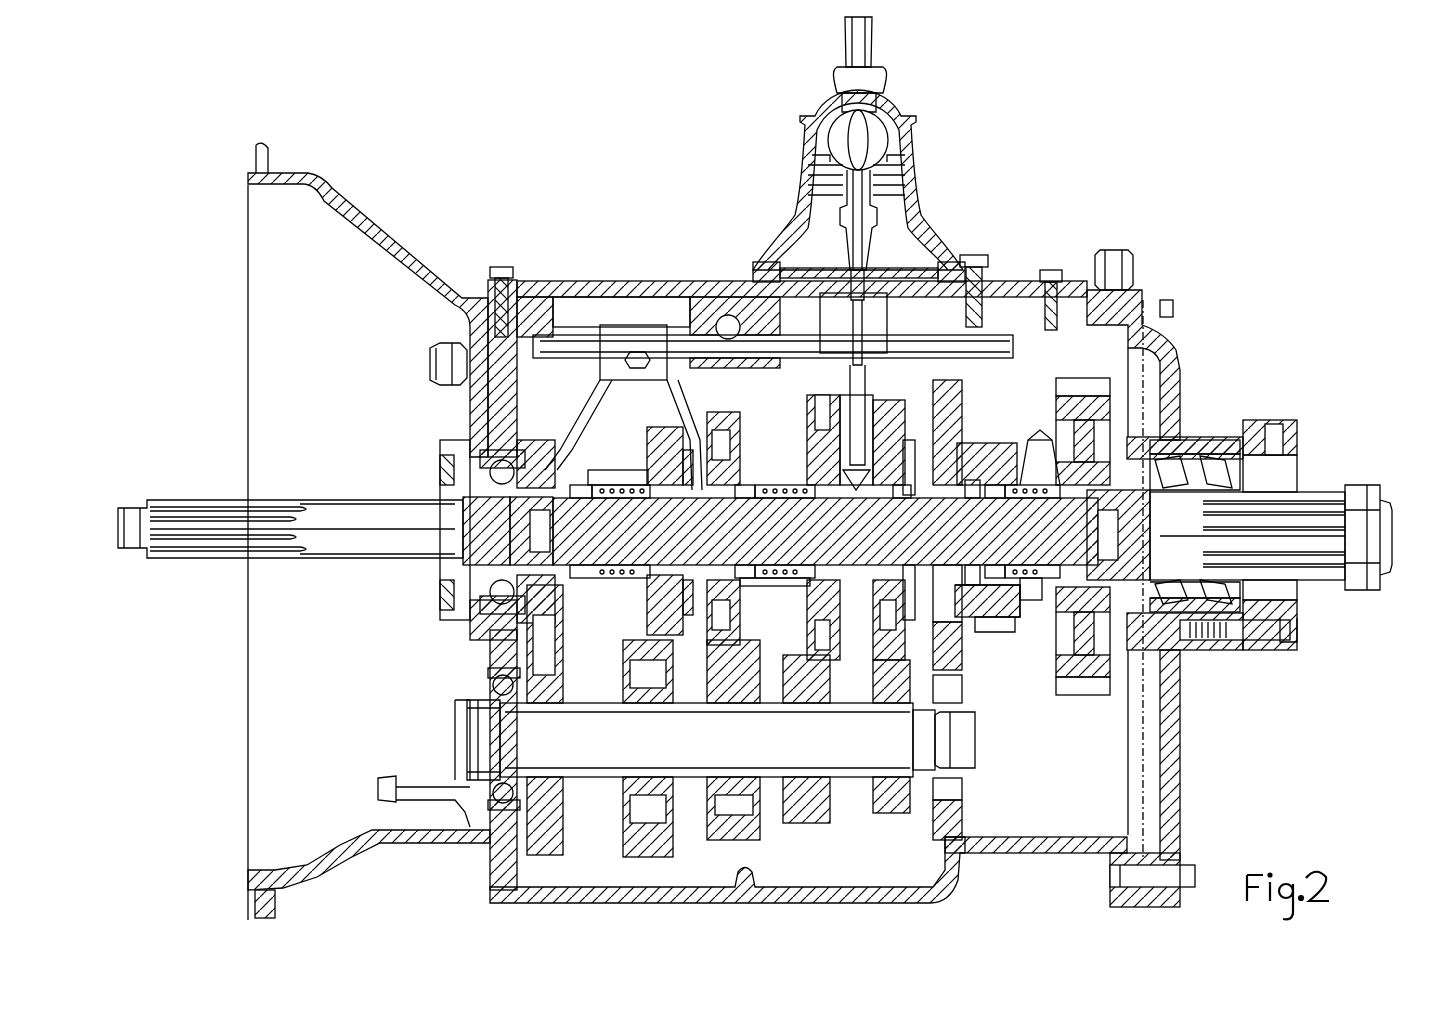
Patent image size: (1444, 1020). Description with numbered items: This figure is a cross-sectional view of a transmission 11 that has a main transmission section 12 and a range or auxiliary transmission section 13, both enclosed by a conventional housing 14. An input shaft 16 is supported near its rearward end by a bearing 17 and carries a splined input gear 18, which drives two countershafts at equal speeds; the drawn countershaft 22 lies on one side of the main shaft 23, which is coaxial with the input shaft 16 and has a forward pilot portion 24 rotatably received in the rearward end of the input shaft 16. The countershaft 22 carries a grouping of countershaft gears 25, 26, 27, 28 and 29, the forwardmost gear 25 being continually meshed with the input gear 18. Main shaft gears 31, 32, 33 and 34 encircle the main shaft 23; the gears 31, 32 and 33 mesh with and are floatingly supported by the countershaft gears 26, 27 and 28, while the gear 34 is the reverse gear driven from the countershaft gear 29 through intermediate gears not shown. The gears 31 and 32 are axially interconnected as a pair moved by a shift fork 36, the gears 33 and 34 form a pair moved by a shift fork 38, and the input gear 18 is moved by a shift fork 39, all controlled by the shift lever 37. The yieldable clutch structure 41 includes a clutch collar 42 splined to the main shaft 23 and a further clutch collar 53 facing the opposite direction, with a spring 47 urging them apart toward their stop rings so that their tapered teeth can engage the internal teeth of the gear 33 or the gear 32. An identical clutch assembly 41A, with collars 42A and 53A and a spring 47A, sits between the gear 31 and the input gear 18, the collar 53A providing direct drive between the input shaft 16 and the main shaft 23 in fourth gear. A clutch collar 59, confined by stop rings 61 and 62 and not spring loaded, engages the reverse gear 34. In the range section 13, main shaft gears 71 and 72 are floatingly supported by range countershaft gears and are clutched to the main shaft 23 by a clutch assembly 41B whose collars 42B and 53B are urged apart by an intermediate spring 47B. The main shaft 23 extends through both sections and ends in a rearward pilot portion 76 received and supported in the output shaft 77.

The transmission 11 is at (595, 122).
The main transmission section 12 is at (744, 897).
The range transmission section 13 is at (1032, 860).
The housing 14 is at (600, 283).
The input shaft 16 is at (345, 505).
The bearing 17 is at (438, 484).
The input gear 18 is at (543, 447).
The countershaft 22 is at (905, 740).
The main shaft 23 is at (600, 580).
The pilot portion 24 is at (490, 548).
The countershaft gear 25 is at (510, 860).
The countershaft gear 26 is at (640, 840).
The countershaft gear 27 is at (745, 828).
The countershaft gear 28 is at (808, 815).
The countershaft gear 29 is at (890, 808).
The main shaft gear 31 is at (660, 430).
The main shaft gear 32 is at (720, 420).
The main shaft gear 33 is at (799, 527).
The reverse gear 34 is at (890, 410).
The shift fork 36 is at (678, 390).
The shift lever 37 is at (867, 42).
The shift fork 38 is at (848, 393).
The shift fork 39 is at (585, 412).
The yieldable clutch structure 41 is at (760, 580).
The resilient clutch assembly 41A is at (605, 480).
The resilient clutch assembly 41B is at (1020, 600).
The clutch collar 42 is at (808, 487).
The clutch collar 42A is at (648, 500).
The clutch collar 42B is at (1046, 485).
The spring 47 is at (787, 582).
The spring 47A is at (600, 578).
The intermediate spring 47B is at (1030, 510).
The clutch collar 53 is at (742, 487).
The clutch collar 53A is at (582, 500).
The clutch collar 53B is at (990, 487).
The clutch collar 59 is at (908, 470).
The stop ring 61 is at (880, 500).
The stop ring 62 is at (904, 490).
The main shaft gear 71 is at (985, 625).
The main shaft gear 72 is at (1088, 670).
The pilot portion 76 is at (1115, 527).
The output shaft 77 is at (1300, 525).